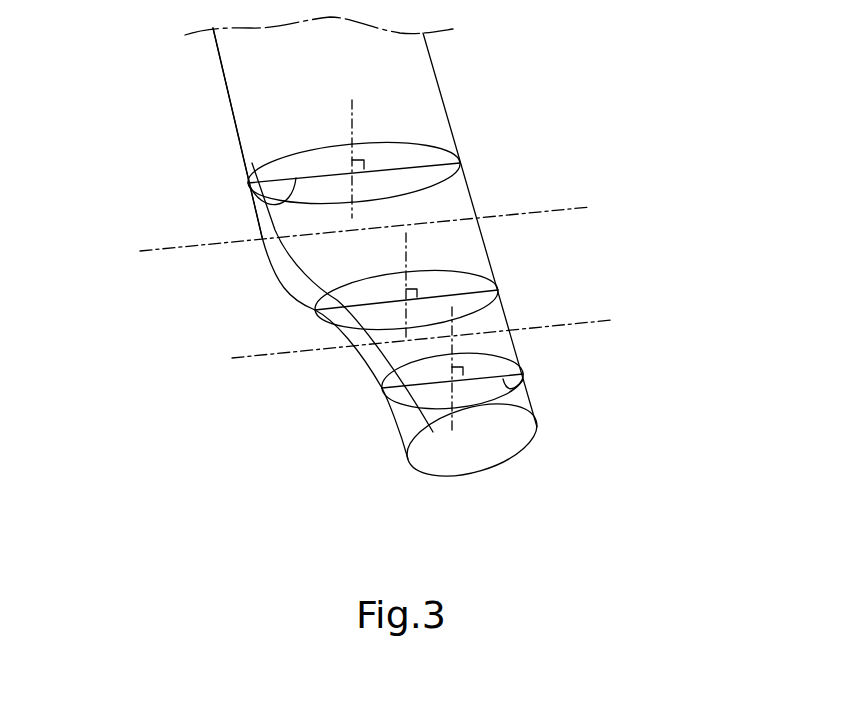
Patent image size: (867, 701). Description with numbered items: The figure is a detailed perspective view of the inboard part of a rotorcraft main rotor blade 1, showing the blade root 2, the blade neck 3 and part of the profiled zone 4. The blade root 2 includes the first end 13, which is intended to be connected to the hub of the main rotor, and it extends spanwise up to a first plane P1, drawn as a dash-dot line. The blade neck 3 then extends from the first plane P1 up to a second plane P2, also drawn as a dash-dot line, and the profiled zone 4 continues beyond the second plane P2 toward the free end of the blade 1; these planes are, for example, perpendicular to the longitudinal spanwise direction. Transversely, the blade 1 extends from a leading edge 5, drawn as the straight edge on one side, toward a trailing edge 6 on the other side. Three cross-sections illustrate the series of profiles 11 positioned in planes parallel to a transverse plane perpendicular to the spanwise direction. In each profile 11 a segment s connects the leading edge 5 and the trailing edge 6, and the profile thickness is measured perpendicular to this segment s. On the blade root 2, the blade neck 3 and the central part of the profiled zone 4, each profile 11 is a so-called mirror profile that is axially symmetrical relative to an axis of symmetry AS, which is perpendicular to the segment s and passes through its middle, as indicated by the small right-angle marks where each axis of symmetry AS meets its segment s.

The blade 1 is at (165, 470).
The blade root 2 is at (604, 378).
The blade neck 3 is at (654, 253).
The profiled zone 4 is at (580, 121).
The leading edge 5 is at (438, 82).
The trailing edge 6 is at (229, 100).
The profile 11 is at (420, 145).
The first end 13 is at (480, 445).
The axis of symmetry AS is at (352, 106).
The segment s is at (262, 208).
The first plane P1 is at (582, 320).
The second plane P2 is at (552, 208).